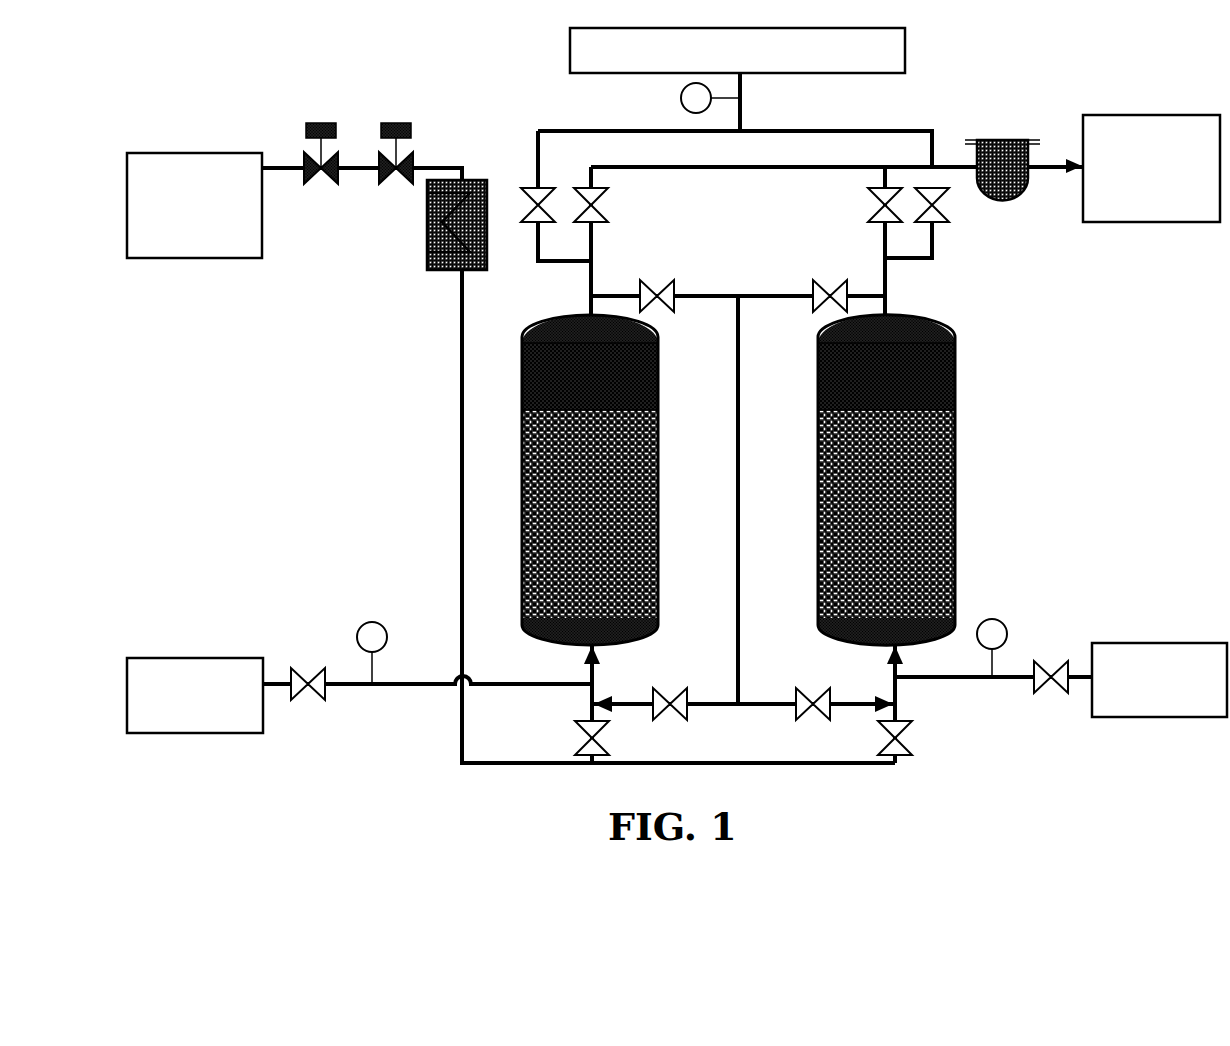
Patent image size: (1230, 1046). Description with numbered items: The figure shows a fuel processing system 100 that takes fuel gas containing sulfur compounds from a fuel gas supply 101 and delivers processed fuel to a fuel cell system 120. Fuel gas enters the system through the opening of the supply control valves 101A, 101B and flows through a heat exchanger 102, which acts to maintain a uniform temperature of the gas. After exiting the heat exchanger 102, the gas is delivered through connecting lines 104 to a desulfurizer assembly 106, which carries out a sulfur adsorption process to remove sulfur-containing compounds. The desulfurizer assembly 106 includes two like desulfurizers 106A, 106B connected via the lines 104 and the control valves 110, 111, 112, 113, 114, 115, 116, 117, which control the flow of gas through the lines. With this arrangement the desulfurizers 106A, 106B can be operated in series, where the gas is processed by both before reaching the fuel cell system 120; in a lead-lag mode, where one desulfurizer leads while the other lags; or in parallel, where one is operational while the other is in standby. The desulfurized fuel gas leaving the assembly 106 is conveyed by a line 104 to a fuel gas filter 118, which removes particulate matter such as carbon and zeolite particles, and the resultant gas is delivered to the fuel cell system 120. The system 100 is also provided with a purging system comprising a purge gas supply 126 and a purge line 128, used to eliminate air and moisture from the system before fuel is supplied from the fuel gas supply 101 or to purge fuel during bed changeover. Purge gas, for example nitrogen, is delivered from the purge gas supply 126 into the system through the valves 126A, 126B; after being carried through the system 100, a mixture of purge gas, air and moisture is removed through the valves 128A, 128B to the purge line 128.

The fuel processing system 100 is at (677, 395).
The fuel gas supply 101 is at (178, 260).
The supply control valve 101A is at (321, 185).
The supply control valve 101B is at (396, 185).
The heat exchanger 102 is at (427, 262).
The connecting line 104 is at (463, 421).
The desulfurizer assembly 106 is at (761, 472).
The desulfurizer 106A is at (522, 380).
The desulfurizer 106B is at (955, 440).
The control valve 110 is at (580, 738).
The control valve 111 is at (652, 285).
The control valve 112 is at (805, 700).
The control valve 113 is at (875, 201).
The control valve 114 is at (905, 740).
The control valve 115 is at (826, 285).
The control valve 116 is at (667, 700).
The control valve 117 is at (597, 207).
The fuel gas filter 118 is at (1002, 200).
The fuel cell system 120 is at (1130, 224).
The purge gas supply 126 is at (215, 657).
The purge valve 126A is at (308, 670).
The purge valve 126B is at (382, 645).
The purge line 128 is at (868, 58).
The purge line valve 128A is at (692, 104).
The purge line valve 128B is at (537, 200).